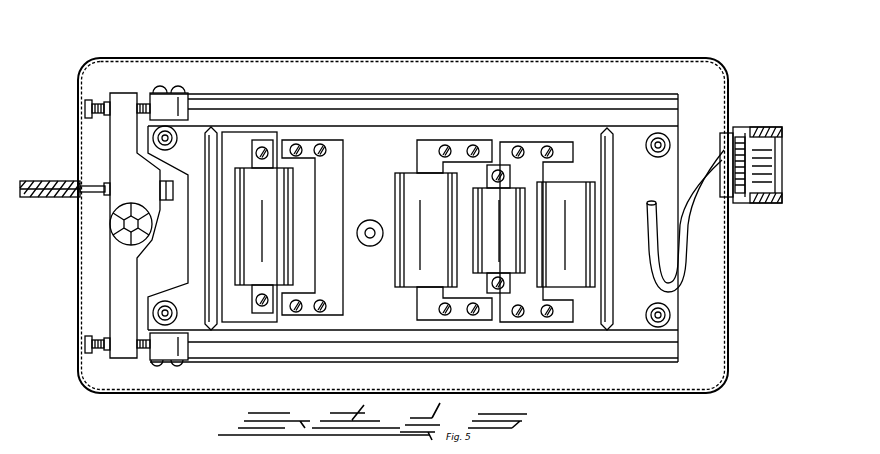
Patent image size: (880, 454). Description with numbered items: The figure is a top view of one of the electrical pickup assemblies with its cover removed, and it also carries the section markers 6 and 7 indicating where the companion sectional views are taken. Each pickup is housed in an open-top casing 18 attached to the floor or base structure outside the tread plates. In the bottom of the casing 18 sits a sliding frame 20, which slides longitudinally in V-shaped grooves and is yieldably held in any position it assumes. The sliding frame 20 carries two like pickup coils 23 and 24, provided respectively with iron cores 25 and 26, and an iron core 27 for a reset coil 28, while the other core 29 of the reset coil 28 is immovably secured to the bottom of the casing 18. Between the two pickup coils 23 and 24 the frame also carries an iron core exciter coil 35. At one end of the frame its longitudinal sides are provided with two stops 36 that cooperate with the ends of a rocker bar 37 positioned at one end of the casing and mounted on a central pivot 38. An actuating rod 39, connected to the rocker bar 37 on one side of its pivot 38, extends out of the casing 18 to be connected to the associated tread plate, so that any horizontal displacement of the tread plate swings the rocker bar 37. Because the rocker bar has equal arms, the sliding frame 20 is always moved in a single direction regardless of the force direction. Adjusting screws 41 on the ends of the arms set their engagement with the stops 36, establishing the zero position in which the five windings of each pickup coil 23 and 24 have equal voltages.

The casing 18 is at (602, 59).
The sliding frame 20 is at (412, 97).
The pickup coil 23 is at (400, 272).
The pickup coil 24 is at (583, 197).
The iron core 25 is at (423, 300).
The iron core 26 is at (562, 295).
The iron core 27 is at (335, 175).
The reset coil 28 is at (280, 228).
The core 29 is at (256, 292).
The iron core exciter coil 35 is at (508, 197).
The stops 36 is at (157, 110).
The rocker bar 37 is at (118, 283).
The central pivot 38 is at (116, 227).
The actuating rod 39 is at (98, 184).
The adjusting screws 41 is at (97, 102).
The section line 6- 6 is at (167, 228).
The section line 7- 7 is at (403, 225).